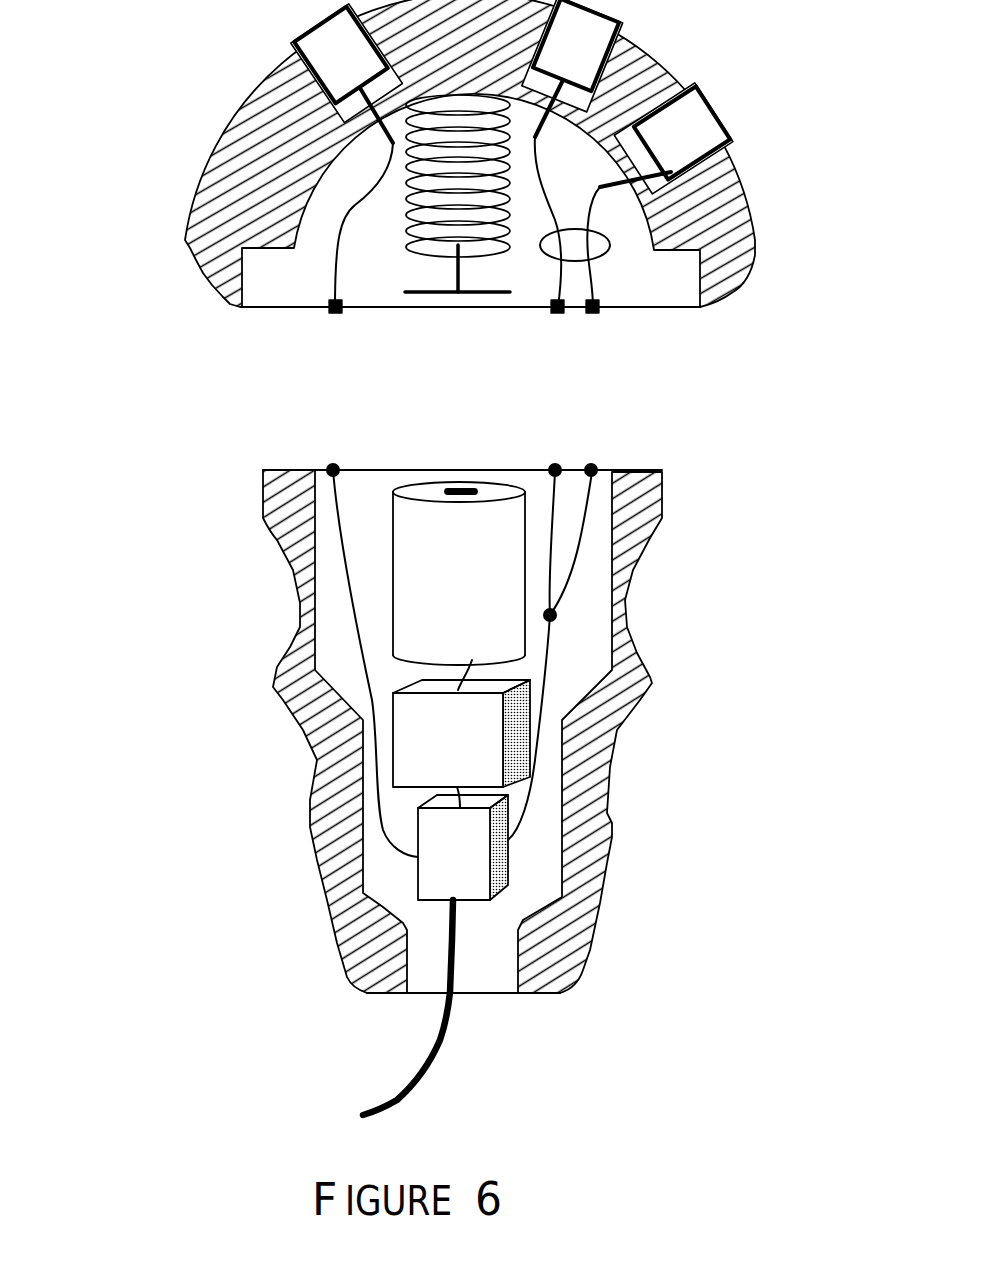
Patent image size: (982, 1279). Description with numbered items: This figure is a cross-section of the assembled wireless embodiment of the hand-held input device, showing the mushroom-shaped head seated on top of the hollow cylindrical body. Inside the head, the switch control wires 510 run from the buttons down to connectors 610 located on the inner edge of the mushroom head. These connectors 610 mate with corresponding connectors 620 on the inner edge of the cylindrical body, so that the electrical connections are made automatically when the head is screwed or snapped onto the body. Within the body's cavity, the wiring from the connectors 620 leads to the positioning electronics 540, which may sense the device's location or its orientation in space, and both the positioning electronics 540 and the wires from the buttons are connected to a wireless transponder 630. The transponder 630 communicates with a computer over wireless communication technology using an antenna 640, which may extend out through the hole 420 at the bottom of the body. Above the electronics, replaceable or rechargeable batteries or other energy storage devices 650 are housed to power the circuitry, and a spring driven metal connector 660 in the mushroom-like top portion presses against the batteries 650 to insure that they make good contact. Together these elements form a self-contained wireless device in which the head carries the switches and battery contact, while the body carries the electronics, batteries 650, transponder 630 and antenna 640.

The hole 420 is at (478, 970).
The switch control wires 510 is at (336, 240).
The positioning electronics 540 is at (440, 742).
The connectors 610 is at (334, 311).
The connectors 620 is at (333, 470).
The wireless transponder 630 is at (452, 857).
The antenna 640 is at (440, 1040).
The batteries 650 is at (447, 577).
The spring driven metal connector 660 is at (395, 143).